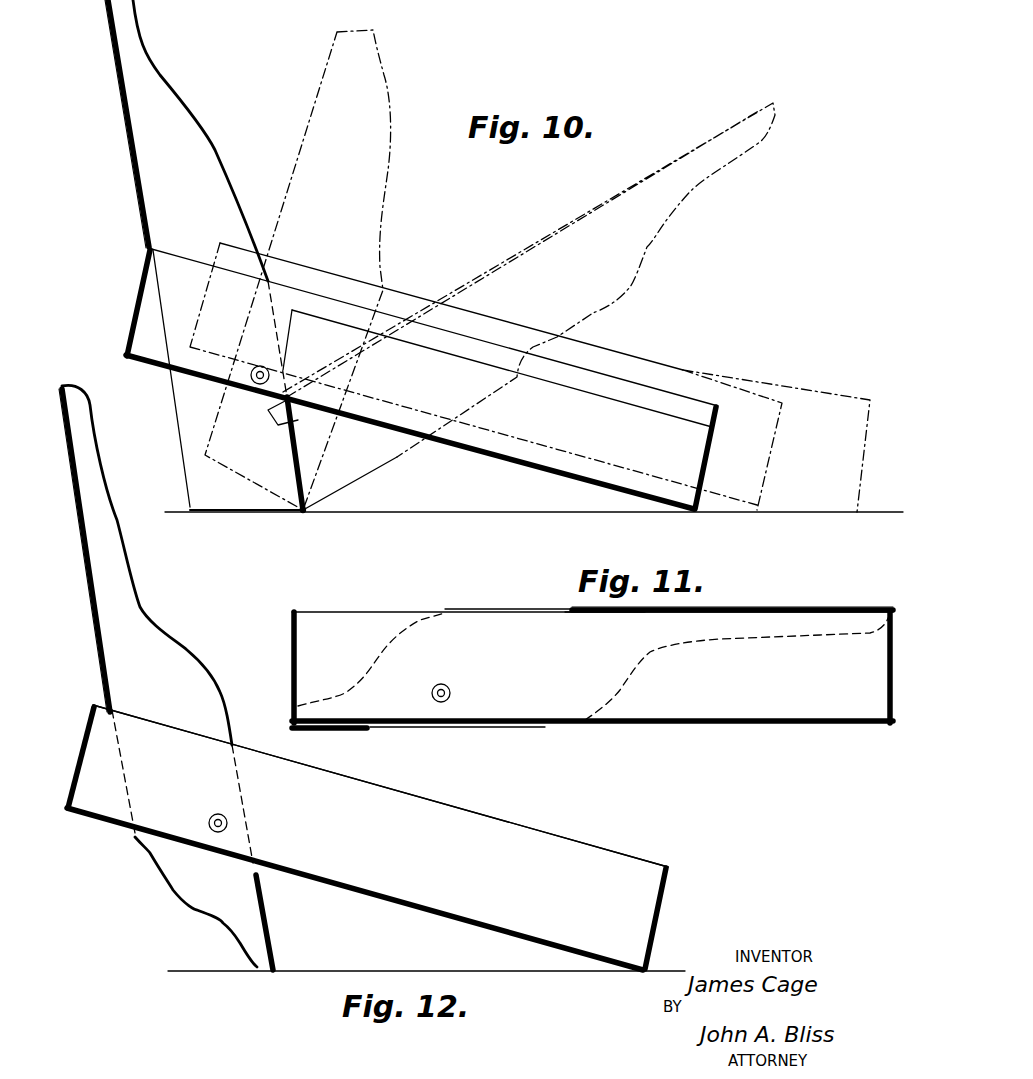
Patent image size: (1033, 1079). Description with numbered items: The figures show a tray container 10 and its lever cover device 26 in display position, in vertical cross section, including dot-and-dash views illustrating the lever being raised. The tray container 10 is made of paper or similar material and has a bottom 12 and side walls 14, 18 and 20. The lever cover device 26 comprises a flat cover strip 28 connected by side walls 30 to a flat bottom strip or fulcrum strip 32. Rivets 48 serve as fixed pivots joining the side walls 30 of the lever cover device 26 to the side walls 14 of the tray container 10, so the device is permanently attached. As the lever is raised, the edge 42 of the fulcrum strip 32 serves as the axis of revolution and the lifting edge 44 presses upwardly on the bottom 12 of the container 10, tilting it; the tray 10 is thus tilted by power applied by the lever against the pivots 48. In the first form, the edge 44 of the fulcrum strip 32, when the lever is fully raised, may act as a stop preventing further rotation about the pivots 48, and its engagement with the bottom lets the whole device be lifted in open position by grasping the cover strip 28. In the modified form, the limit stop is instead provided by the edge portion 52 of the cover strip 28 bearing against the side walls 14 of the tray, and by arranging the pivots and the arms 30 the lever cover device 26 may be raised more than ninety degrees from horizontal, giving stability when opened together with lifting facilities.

In FIG. 10, the tray container 10 is at (554, 477).
In FIG. 11, the tray container 10 is at (733, 727).
In FIG. 12, the tray container 10 is at (363, 896).
In FIG. 10, the bottom 12 is at (455, 447).
In FIG. 11, the bottom 12 is at (620, 727).
In FIG. 12, the bottom 12 is at (475, 918).
In FIG. 10, the side wall 14 is at (600, 395).
In FIG. 11, the side wall 14 is at (477, 608).
In FIG. 12, the side wall 14 is at (150, 733).
In FIG. 10, the side wall 18 is at (713, 430).
In FIG. 11, the side wall 18 is at (888, 674).
In FIG. 12, the side wall 18 is at (665, 898).
In FIG. 10, the rear side wall 20 is at (141, 298).
In FIG. 11, the rear side wall 20 is at (297, 665).
In FIG. 12, the rear side wall 20 is at (90, 733).
In FIG. 10, the lever cover device 26 is at (127, 160).
In FIG. 11, the lever cover device 26 is at (773, 606).
In FIG. 12, the lever cover device 26 is at (148, 858).
In FIG. 10, the cover strip 28 is at (119, 96).
In FIG. 11, the cover strip 28 is at (851, 608).
In FIG. 12, the cover strip 28 is at (92, 598).
In FIG. 10, the side walls 30 is at (203, 152).
In FIG. 11, the side walls 30 is at (397, 648).
In FIG. 12, the side walls 30 is at (140, 620).
In FIG. 10, the fulcrum strip 32 is at (362, 480).
In FIG. 11, the fulcrum strip 32 is at (335, 726).
In FIG. 12, the fulcrum strip 32 is at (270, 935).
In FIG. 10, the edge 42 is at (306, 513).
In FIG. 10, the lifting edge 44 is at (298, 398).
In FIG. 10, the rivets 48 is at (253, 368).
In FIG. 11, the rivets 48 is at (452, 690).
In FIG. 12, the rivets 48 is at (227, 822).
In FIG. 11, the edge portion 52 is at (572, 613).
In FIG. 12, the edge portion 52 is at (112, 747).